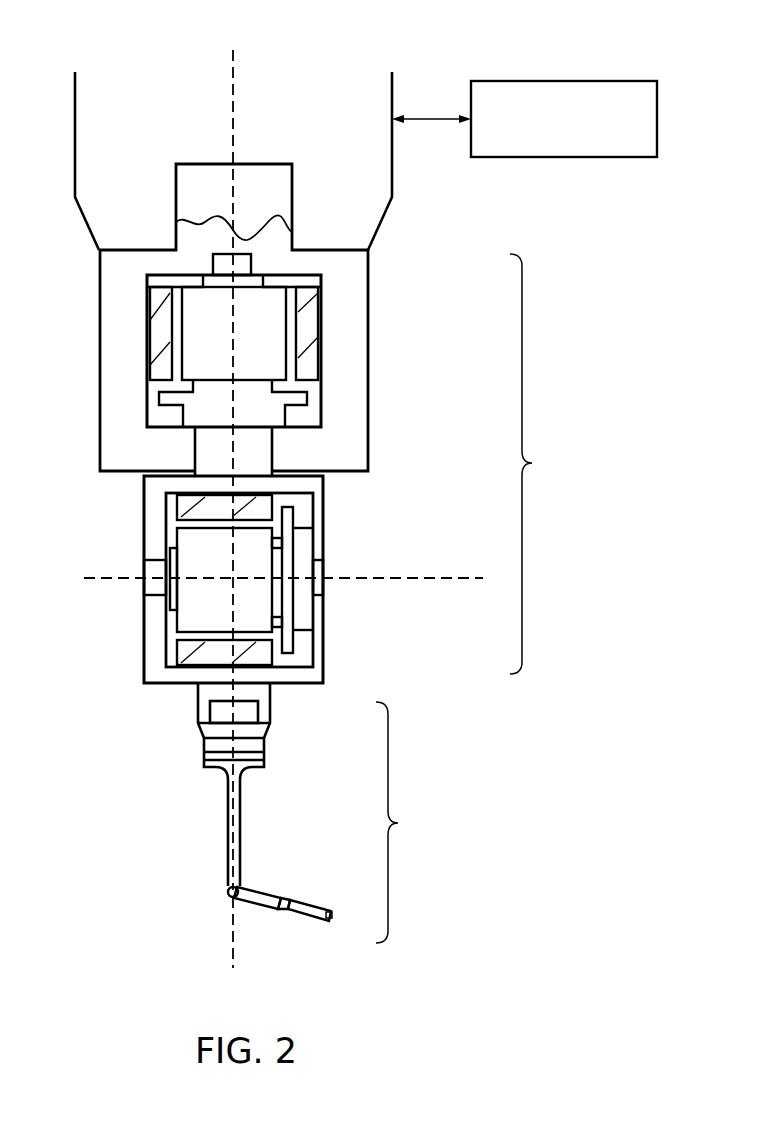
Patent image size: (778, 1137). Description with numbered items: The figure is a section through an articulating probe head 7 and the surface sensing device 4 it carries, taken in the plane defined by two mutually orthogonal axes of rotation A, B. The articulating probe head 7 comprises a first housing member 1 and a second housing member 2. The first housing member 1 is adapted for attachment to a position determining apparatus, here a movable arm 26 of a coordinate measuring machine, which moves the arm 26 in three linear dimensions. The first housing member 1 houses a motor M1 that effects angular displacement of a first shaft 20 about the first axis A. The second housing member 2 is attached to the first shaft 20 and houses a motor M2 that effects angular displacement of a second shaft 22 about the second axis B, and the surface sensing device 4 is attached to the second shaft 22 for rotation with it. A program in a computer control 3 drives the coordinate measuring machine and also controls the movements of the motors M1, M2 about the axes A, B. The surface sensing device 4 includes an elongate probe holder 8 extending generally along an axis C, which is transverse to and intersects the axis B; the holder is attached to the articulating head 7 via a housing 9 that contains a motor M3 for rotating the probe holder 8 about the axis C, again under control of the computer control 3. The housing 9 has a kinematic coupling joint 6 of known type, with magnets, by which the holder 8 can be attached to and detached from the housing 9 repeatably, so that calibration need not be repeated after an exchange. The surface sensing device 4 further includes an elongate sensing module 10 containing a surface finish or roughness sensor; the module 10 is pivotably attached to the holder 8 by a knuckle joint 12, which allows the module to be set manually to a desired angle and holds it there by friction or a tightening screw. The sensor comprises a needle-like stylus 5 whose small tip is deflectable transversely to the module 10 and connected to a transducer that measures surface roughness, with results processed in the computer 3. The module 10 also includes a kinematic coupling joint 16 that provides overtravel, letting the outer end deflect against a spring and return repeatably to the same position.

The movable arm 26 is at (107, 119).
The computer control 3 is at (632, 81).
The first housing member 1 is at (118, 272).
The motor M1 is at (210, 329).
The first shaft 20 is at (212, 446).
The articulating probe head 7 is at (532, 463).
The second housing member 2 is at (157, 525).
The motor M2 is at (190, 612).
The second shaft 22 is at (158, 575).
The housing 9 is at (203, 692).
The motor M3 is at (217, 713).
The kinematic coupling joint 6 is at (202, 747).
The probe holder 8 is at (227, 827).
The knuckle joint 12 is at (228, 890).
The sensing module 10 is at (267, 893).
The kinematic coupling joint 16 is at (278, 908).
The stylus 5 is at (320, 923).
The surface sensing device 4 is at (398, 823).
The first axis A is at (245, 467).
The second axis B is at (284, 561).
The axis C is at (233, 953).